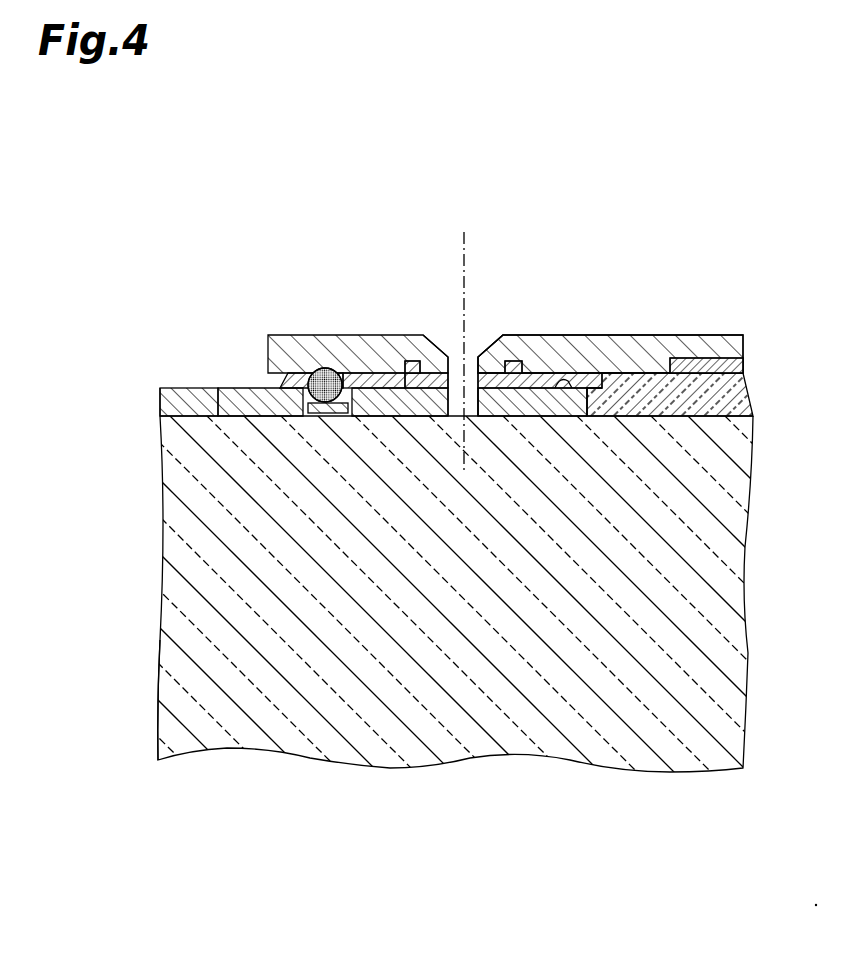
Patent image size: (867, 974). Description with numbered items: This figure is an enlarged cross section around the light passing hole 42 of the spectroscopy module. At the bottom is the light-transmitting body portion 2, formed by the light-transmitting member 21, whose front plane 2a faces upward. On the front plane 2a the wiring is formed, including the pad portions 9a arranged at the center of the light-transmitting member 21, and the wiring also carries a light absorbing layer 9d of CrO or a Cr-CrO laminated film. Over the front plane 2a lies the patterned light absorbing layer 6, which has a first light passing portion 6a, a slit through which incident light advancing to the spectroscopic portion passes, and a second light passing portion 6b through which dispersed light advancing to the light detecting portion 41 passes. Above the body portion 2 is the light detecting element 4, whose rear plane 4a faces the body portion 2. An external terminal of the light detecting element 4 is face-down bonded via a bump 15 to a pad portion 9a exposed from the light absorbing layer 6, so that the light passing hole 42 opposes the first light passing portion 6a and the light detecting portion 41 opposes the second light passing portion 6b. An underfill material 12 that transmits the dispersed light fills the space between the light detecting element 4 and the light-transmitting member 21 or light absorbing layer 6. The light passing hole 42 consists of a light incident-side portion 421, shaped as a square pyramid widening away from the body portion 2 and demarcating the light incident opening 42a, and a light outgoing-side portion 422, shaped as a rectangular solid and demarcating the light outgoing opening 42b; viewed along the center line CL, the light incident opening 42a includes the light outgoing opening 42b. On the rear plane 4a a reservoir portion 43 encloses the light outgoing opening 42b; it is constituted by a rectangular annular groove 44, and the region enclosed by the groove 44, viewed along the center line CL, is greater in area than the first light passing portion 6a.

The body portion 2 is at (162, 358).
The light-transmitting member 21 is at (173, 688).
The front plane 2a is at (215, 388).
The light absorbing layer 6 is at (245, 388).
The first light passing portion 6a is at (476, 392).
The second light passing portion 6b is at (597, 390).
The underfill material 12 is at (648, 383).
The light passing hole 42 is at (512, 289).
The light incident-side portion 421 is at (452, 338).
The light outgoing-side portion 422 is at (444, 335).
The light incident opening 42a is at (478, 395).
The light outgoing opening 42b is at (430, 375).
The light detecting element 4 is at (617, 314).
The light detecting portion 41 is at (723, 363).
The rear plane 4a is at (562, 382).
The pad portions 9a is at (310, 378).
The light absorbing layer 9d is at (343, 388).
The bump 15 is at (333, 382).
The groove 44 is at (374, 593).
The reservoir portion 43 is at (418, 373).
The center line CL is at (464, 337).